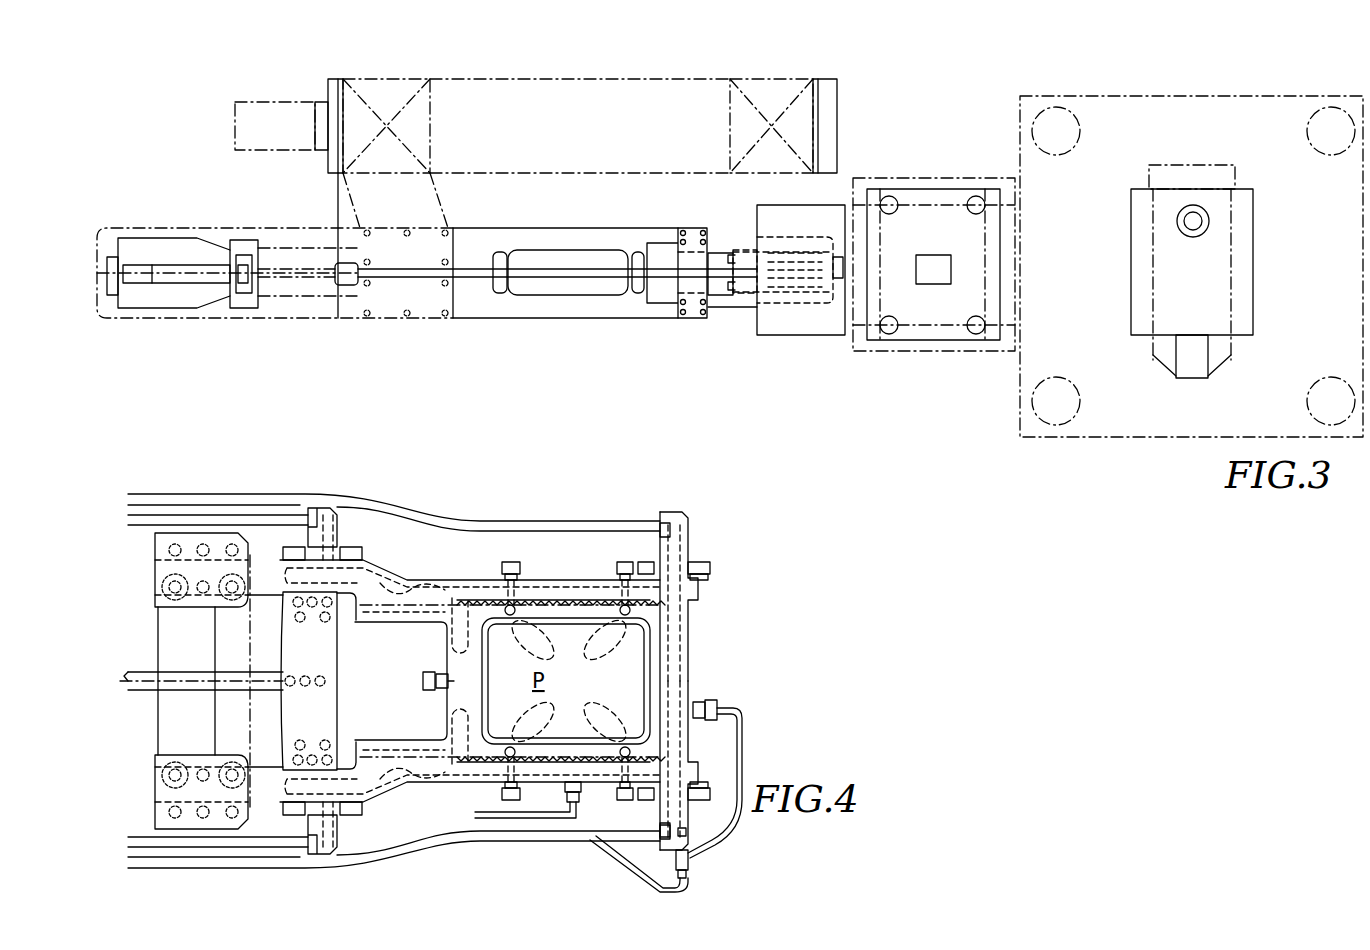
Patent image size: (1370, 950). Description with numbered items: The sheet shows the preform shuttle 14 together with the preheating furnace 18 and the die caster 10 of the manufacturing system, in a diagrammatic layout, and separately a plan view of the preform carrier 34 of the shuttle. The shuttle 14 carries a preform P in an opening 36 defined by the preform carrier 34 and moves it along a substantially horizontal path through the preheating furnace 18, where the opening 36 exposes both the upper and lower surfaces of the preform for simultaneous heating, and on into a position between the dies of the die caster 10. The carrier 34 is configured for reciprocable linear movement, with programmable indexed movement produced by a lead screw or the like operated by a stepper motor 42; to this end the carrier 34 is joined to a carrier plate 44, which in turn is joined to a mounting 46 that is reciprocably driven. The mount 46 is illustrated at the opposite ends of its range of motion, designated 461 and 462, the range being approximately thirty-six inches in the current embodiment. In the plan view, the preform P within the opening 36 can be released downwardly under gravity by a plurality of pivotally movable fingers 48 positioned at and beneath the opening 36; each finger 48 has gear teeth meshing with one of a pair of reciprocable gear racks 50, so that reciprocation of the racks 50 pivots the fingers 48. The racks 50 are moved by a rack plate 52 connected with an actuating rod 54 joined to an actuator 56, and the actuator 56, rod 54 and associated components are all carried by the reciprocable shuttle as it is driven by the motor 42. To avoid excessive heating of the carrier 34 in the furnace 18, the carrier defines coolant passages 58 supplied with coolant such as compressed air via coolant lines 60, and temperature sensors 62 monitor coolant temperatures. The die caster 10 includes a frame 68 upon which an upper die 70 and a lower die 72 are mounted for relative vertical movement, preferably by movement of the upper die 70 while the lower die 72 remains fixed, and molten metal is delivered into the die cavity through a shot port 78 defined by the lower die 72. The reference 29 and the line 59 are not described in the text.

In FIG. 3, the die caster 10 is at (1235, 82).
In FIG. 3, the preform shuttle 14 is at (480, 332).
In FIG. 3, the preheating furnace 18 is at (900, 175).
In FIG. 3, the connector block 29 is at (800, 340).
In FIG. 3, the preform carrier 34 is at (735, 307).
In FIG. 4, the preform carrier 34 is at (468, 565).
In FIG. 4, the opening 36 is at (650, 672).
In FIG. 3, the stepper motor 42 is at (315, 102).
In FIG. 3, the carrier plate 44 is at (573, 318).
In FIG. 4, the carrier plate 44 is at (155, 550).
In FIG. 3, the mounting 46 is at (387, 320).
In FIG. 3, the mount at first end of range 461 is at (400, 79).
In FIG. 3, the mount at second end of range 462 is at (785, 79).
In FIG. 4, the movable fingers 48 is at (548, 652).
In FIG. 4, the gear racks 50 is at (335, 605).
In FIG. 4, the rack plate 52 is at (325, 655).
In FIG. 3, the actuating rod 54 is at (555, 262).
In FIG. 4, the actuating rod 54 is at (150, 672).
In FIG. 3, the actuator 56 is at (178, 265).
In FIG. 4, the coolant passages 58 is at (412, 777).
In FIG. 4, the upper passage 59 is at (412, 585).
In FIG. 4, the coolant lines 60 is at (228, 516).
In FIG. 4, the temperature sensors 62 is at (712, 700).
In FIG. 3, the frame 68 is at (925, 360).
In FIG. 3, the upper die 70 is at (1248, 270).
In FIG. 3, the lower die 72 is at (1255, 205).
In FIG. 3, the shot port 78 is at (1193, 232).